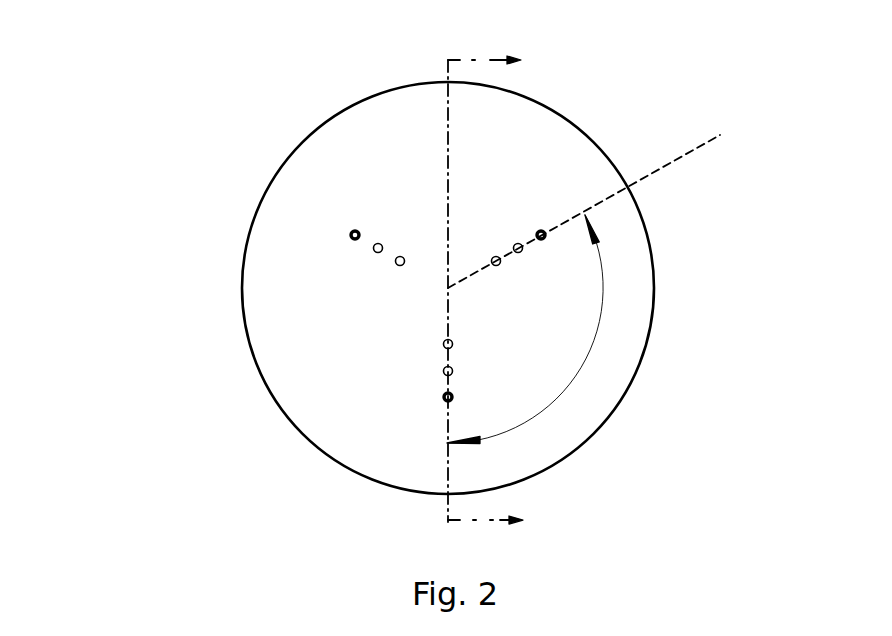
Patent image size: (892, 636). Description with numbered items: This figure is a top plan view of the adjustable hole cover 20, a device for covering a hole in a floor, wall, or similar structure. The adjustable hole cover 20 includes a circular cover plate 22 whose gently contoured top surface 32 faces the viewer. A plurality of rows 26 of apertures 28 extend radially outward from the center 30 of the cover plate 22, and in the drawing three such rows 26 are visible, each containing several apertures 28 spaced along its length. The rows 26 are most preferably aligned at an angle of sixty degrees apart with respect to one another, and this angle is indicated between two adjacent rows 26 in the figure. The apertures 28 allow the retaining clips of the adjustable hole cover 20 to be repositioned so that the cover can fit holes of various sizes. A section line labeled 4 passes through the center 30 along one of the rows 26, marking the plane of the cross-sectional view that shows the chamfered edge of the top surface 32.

The adjustable hole cover 20 is at (182, 128).
The cover plate 22 is at (642, 318).
The rows of apertures 26 is at (526, 200).
The apertures 28 is at (375, 252).
The center of the cover plate 30 is at (455, 288).
The top surface 32 is at (366, 161).
The section line 4- 4 is at (485, 290).